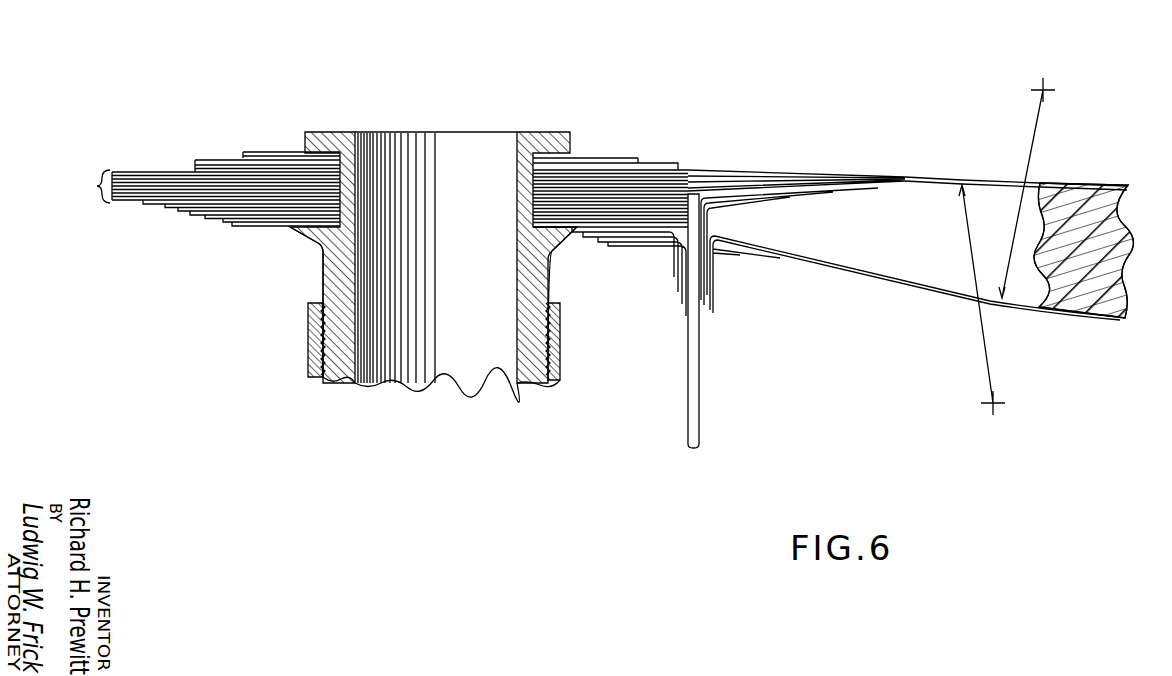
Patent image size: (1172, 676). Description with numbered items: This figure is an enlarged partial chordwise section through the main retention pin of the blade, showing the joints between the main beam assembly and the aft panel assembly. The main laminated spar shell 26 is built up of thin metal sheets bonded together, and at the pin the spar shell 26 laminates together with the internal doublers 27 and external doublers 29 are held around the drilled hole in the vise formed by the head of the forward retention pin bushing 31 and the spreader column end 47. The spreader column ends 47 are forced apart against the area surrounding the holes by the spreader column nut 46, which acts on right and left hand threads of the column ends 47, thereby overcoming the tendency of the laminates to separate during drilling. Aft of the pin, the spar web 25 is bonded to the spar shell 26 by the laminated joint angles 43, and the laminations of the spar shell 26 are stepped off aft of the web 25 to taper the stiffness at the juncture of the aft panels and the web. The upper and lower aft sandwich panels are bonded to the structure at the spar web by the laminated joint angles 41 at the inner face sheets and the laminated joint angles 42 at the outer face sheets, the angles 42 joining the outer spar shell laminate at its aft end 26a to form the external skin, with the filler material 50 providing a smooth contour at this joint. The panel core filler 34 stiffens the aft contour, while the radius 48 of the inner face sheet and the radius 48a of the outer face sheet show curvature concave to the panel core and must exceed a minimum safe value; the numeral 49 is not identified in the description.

The spar web 25 is at (698, 393).
The main laminated spar shell 26 is at (97, 190).
The aft end of outer spar shell laminate 26a is at (908, 178).
The internal doublers 27 is at (232, 224).
The external doublers 29 is at (243, 152).
The forward retention pin bushing 31 is at (340, 130).
The filler 34 is at (1068, 320).
The laminated joint angles 41 is at (780, 258).
The laminated joint angles 42 is at (878, 188).
The laminated joint angles 43 is at (687, 316).
The spreader column nut 46 is at (308, 343).
The spreader column end 47 is at (320, 240).
The internal radius of curvature of inner face sheet 48 is at (1033, 140).
The internal radius of curvature of outer face sheet 48a is at (985, 345).
The spring leaves 49 is at (767, 187).
The filler material 50 is at (927, 177).